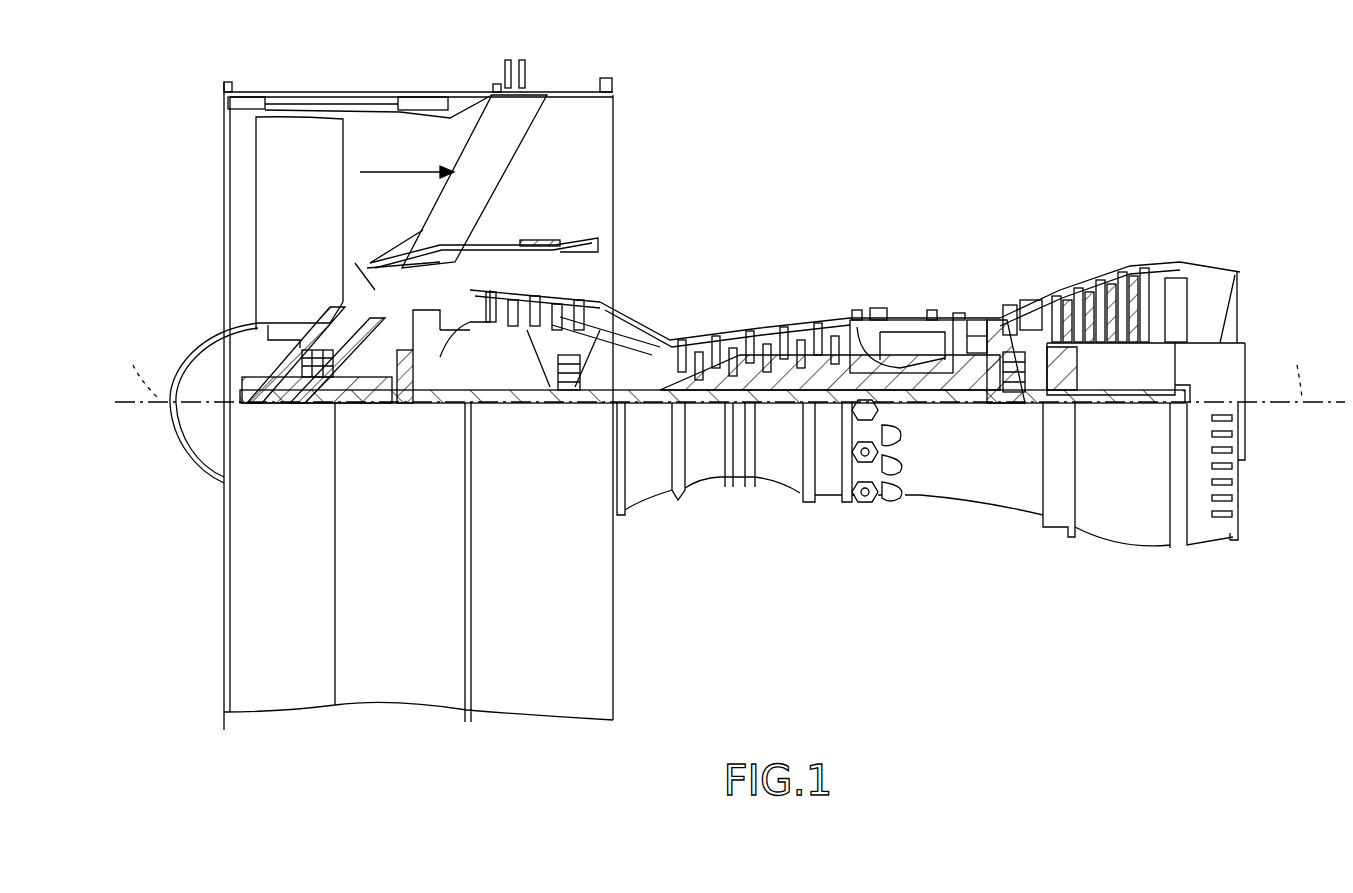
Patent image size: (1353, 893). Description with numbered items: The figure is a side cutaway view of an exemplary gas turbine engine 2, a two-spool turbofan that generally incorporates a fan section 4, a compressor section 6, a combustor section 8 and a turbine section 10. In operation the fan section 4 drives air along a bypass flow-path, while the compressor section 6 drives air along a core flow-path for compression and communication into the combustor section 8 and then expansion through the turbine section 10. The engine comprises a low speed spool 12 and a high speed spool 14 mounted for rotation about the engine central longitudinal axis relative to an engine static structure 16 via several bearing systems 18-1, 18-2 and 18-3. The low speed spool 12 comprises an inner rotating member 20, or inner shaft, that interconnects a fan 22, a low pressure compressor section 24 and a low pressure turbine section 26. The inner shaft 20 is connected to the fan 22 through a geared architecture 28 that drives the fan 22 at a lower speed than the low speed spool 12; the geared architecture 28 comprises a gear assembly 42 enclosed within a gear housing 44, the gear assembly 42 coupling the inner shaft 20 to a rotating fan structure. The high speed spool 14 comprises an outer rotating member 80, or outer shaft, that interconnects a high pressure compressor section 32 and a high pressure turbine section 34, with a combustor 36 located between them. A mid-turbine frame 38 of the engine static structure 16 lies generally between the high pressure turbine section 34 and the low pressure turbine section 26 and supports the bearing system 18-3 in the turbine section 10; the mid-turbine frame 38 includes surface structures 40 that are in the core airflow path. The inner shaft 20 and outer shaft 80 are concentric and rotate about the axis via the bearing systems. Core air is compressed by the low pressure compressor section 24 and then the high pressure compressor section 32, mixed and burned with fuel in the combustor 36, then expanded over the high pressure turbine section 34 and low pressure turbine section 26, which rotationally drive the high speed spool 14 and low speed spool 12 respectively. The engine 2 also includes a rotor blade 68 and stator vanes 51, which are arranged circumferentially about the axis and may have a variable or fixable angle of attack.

The gas turbine engine 2 is at (957, 118).
The fan section 4 is at (486, 70).
The compressor section 6 is at (470, 206).
The combustor section 8 is at (850, 206).
The turbine section 10 is at (1178, 206).
The low speed spool 12 is at (787, 420).
The high speed spool 14 is at (822, 372).
The engine static structure 16 is at (398, 700).
The bearing system 18-1 is at (310, 405).
The bearing system 18-2 is at (567, 403).
The bearing system 18-3 is at (1025, 403).
The inner rotating member 20 is at (636, 403).
The fan 22 is at (299, 223).
The low pressure compressor section 24 is at (545, 300).
The low pressure turbine section 26 is at (1108, 285).
The geared architecture 28 is at (428, 420).
The high pressure compressor section 32 is at (768, 370).
The high pressure turbine section 34 is at (975, 335).
The combustor 36 is at (905, 342).
The mid-turbine frame 38 is at (1020, 335).
The surface structures 40 is at (1030, 330).
The gear assembly 42 is at (470, 405).
The gear housing 44 is at (440, 352).
The stator vane 51 is at (706, 335).
The rotor blade 68 is at (1000, 340).
The outer rotating member 80 is at (900, 388).